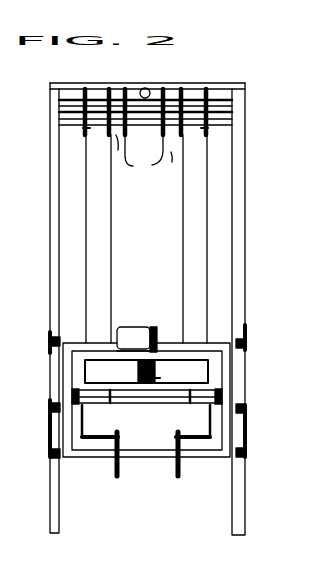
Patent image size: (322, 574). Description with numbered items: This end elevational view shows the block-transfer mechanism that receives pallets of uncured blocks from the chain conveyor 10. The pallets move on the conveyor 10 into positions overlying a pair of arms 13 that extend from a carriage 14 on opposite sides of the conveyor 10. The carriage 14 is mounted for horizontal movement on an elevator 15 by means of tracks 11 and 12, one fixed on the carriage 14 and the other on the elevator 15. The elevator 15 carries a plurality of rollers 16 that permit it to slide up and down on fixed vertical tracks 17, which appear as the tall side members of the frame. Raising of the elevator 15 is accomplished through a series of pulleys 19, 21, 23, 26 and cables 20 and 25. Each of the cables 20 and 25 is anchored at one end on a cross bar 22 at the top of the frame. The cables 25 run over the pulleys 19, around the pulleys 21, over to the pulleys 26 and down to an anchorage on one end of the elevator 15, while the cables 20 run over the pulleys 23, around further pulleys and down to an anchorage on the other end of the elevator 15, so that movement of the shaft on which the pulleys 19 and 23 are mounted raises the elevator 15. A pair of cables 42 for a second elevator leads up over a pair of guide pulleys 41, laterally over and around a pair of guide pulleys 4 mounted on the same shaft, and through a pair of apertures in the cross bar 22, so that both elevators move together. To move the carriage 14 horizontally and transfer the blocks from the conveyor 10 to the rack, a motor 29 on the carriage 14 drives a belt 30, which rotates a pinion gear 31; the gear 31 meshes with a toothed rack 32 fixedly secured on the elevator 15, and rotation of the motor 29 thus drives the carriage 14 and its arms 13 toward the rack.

The guide pulleys 4 is at (161, 85).
The chain conveyor 10 is at (176, 437).
The track 11 is at (110, 399).
The track 12 is at (72, 394).
The arms 13 is at (92, 462).
The carriage 14 is at (80, 368).
The elevator 15 is at (117, 384).
The rollers 16 is at (51, 341).
The vertical tracks 17 is at (57, 257).
The pulleys 19 is at (85, 89).
The cables 20 is at (183, 207).
The pulleys 21 is at (109, 135).
The cross bar 22 is at (55, 83).
The pulleys 23 is at (109, 89).
The cables 25 is at (86, 190).
The pulleys 26 is at (85, 128).
The motor 29 is at (133, 327).
The belt 30 is at (155, 333).
The pinion gear 31 is at (138, 362).
The toothed rack 32 is at (160, 378).
The guide pulleys 41 is at (157, 134).
The cables 42 is at (144, 155).